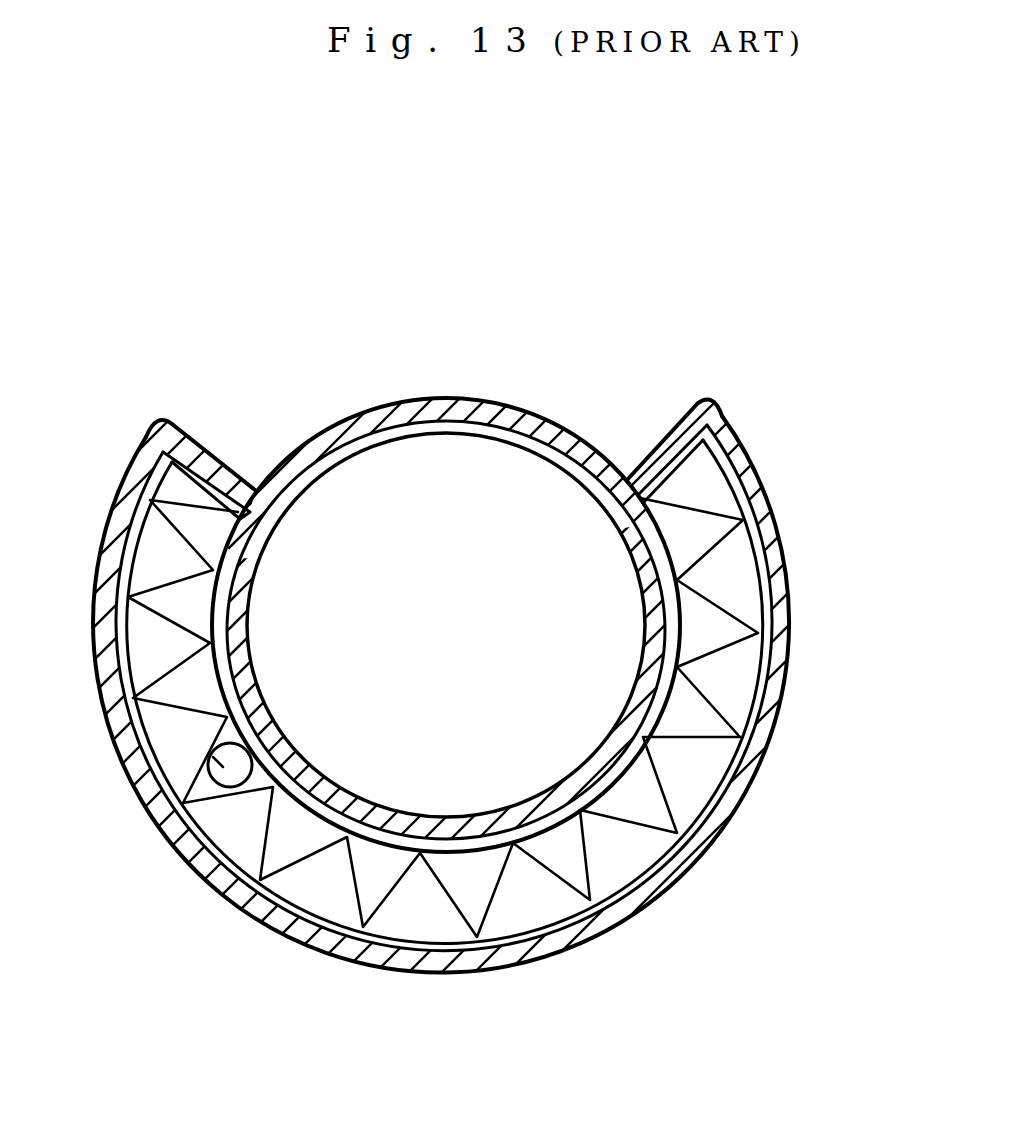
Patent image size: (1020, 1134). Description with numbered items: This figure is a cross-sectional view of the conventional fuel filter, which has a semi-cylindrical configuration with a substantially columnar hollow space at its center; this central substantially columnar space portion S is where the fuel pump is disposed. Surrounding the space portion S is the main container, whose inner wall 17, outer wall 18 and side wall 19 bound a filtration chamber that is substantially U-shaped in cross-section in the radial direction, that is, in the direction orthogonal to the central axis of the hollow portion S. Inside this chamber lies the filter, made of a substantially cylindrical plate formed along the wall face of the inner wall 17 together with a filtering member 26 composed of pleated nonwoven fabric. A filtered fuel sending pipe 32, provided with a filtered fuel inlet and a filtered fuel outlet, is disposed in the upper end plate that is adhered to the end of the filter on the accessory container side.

The inner wall 17 is at (430, 815).
The outer wall 18 is at (319, 930).
The side wall 19 is at (207, 458).
The filtering member 26 is at (795, 669).
The filtered fuel sending pipe 32 is at (212, 752).
The substantially columnar space portion S is at (427, 478).